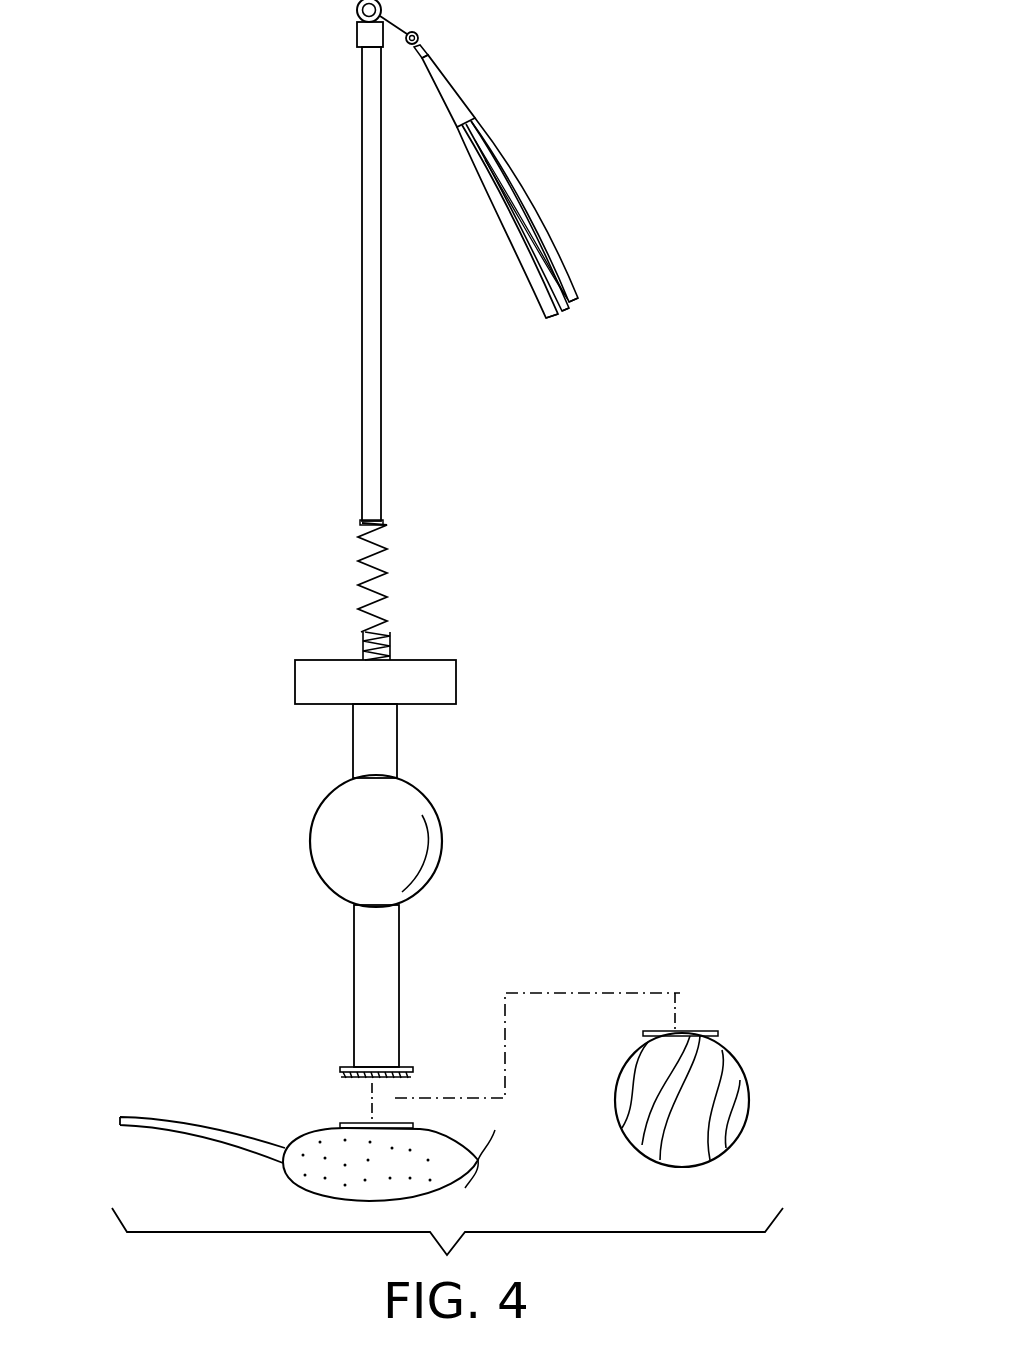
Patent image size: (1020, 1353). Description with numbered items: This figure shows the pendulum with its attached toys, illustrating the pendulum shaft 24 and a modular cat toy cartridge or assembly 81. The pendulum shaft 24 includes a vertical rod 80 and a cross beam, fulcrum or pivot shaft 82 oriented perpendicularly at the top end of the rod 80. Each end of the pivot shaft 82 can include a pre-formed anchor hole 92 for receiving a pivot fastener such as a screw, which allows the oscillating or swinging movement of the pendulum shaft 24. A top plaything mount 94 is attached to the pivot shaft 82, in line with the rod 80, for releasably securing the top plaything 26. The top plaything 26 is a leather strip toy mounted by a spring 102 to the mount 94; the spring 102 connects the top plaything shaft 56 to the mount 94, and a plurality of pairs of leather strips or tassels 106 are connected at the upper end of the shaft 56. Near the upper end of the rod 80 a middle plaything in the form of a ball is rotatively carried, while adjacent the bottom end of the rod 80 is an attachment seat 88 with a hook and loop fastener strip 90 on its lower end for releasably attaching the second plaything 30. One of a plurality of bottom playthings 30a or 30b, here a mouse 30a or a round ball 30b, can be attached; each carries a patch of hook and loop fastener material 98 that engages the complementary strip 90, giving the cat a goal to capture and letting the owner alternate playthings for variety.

The pendulum shaft 24 is at (268, 564).
The top plaything 26 is at (498, 162).
The second plaything 30 is at (310, 830).
The bottom plaything 30a is at (285, 1146).
The bottom plaything 30b is at (752, 1075).
The top plaything shaft 56 is at (361, 324).
The vertical rod 80 is at (354, 981).
The modular cat toy cartridge 81 is at (601, 249).
The pivot shaft 82 is at (446, 706).
The attachment seat 88 is at (336, 1074).
The hook and loop fastener strip 90 is at (346, 1066).
The anchor hole 92 is at (295, 681).
The top plaything mount 94 is at (364, 645).
The hook and loop fastener material 98 is at (684, 1031).
The spring 102 is at (362, 522).
The tassels 106 is at (578, 298).